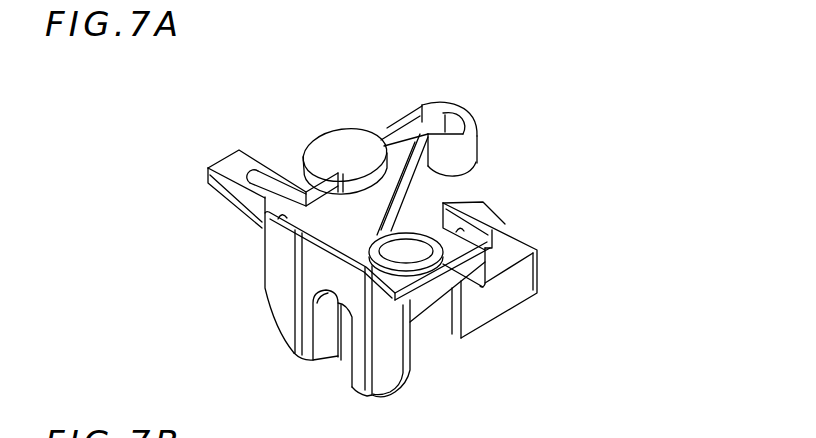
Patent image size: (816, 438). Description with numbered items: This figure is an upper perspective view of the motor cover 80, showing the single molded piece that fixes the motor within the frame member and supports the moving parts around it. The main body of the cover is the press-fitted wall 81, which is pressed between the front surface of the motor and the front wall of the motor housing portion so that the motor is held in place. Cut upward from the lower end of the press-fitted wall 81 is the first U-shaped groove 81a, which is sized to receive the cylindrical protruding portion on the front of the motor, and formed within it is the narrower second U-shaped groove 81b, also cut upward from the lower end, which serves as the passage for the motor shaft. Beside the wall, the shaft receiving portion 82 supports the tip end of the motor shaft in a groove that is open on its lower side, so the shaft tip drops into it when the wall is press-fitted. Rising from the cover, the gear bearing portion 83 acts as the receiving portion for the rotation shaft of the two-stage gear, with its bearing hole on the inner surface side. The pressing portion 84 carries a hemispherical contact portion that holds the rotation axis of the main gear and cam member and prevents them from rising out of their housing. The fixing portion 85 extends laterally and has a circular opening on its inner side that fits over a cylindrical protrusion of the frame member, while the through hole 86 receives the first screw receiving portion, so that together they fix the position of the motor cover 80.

The motor cover 80 is at (559, 112).
The press-fitted wall 81 is at (274, 283).
The first U-shaped groove 81a is at (312, 360).
The second U-shaped groove 81b is at (340, 358).
The shaft receiving portion 82 is at (488, 212).
The gear bearing portion 83 is at (350, 147).
The pressing portion 84 is at (448, 110).
The fixing portion 85 is at (237, 168).
The through hole 86 is at (407, 252).